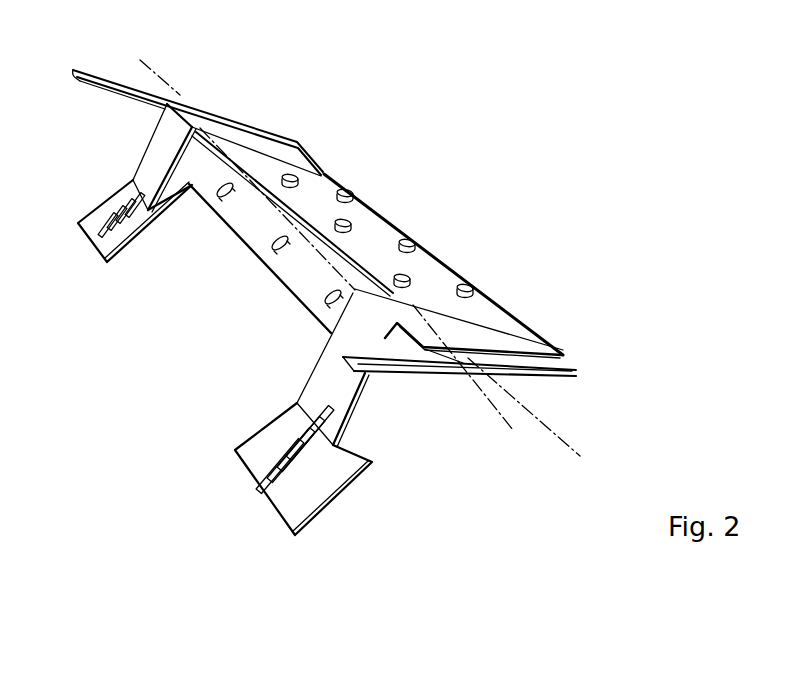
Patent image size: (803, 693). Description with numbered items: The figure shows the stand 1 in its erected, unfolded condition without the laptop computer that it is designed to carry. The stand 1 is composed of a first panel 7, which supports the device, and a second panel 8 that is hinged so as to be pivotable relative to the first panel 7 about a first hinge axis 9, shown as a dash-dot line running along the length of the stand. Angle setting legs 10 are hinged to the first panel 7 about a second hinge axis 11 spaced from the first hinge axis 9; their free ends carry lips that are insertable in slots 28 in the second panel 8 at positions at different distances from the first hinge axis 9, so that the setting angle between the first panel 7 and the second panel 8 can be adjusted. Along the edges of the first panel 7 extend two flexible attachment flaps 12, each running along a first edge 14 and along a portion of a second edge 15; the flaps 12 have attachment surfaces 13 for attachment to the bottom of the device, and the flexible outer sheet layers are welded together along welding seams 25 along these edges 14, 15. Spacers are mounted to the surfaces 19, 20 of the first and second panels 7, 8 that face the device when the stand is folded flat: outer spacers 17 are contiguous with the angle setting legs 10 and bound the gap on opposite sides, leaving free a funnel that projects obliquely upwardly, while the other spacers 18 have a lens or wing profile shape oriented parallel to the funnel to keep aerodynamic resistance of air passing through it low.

The stand 1 is at (494, 188).
The first panel 7 is at (393, 216).
The second panel 8 is at (296, 311).
The first hinge axis 9 is at (567, 447).
The angle setting legs 10 is at (148, 157).
The second hinge axis 11 is at (498, 423).
The flexible attachment flaps 12 is at (355, 224).
The attachment surfaces 13 is at (140, 92).
The first edge 14 is at (95, 78).
The second edge 15 is at (540, 335).
The outer spacers 17 is at (235, 133).
The spacers 18 is at (326, 300).
The surface of the first panel 19 is at (388, 247).
The surface of the second panel 20 is at (266, 224).
The welding seams 25 is at (463, 363).
The slots 28 is at (132, 193).